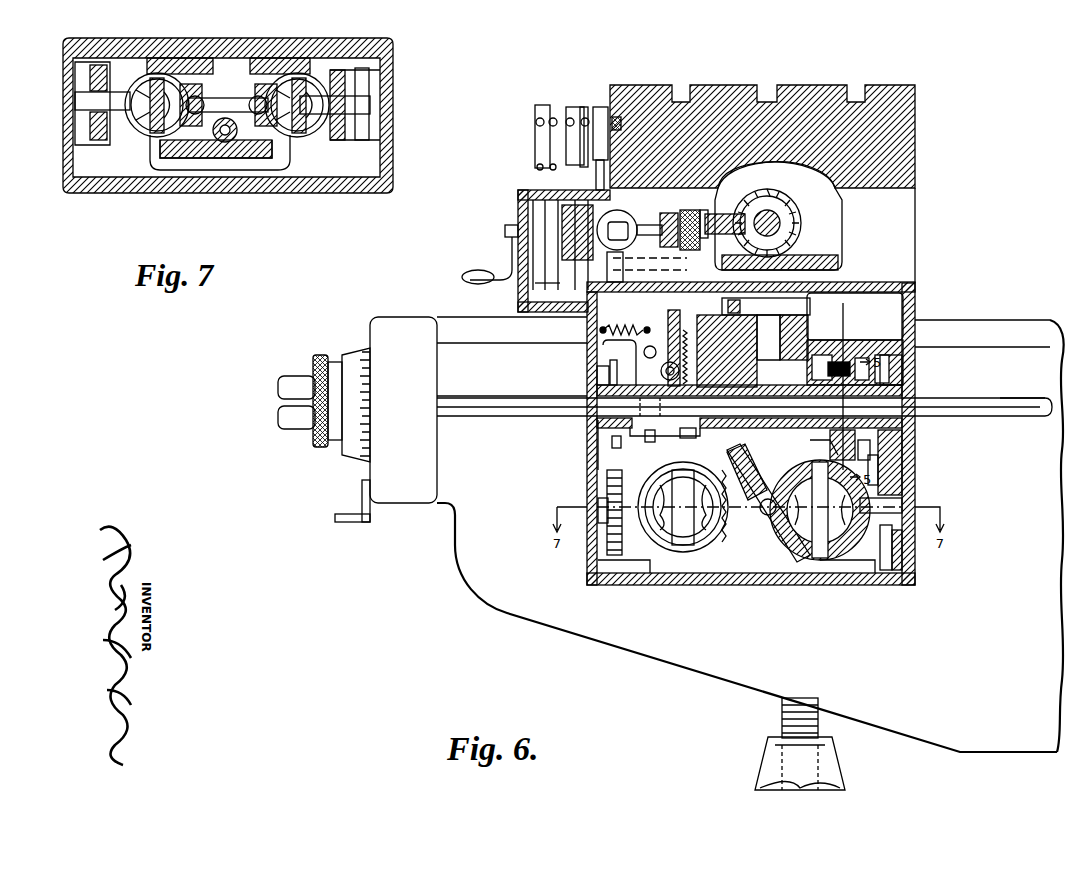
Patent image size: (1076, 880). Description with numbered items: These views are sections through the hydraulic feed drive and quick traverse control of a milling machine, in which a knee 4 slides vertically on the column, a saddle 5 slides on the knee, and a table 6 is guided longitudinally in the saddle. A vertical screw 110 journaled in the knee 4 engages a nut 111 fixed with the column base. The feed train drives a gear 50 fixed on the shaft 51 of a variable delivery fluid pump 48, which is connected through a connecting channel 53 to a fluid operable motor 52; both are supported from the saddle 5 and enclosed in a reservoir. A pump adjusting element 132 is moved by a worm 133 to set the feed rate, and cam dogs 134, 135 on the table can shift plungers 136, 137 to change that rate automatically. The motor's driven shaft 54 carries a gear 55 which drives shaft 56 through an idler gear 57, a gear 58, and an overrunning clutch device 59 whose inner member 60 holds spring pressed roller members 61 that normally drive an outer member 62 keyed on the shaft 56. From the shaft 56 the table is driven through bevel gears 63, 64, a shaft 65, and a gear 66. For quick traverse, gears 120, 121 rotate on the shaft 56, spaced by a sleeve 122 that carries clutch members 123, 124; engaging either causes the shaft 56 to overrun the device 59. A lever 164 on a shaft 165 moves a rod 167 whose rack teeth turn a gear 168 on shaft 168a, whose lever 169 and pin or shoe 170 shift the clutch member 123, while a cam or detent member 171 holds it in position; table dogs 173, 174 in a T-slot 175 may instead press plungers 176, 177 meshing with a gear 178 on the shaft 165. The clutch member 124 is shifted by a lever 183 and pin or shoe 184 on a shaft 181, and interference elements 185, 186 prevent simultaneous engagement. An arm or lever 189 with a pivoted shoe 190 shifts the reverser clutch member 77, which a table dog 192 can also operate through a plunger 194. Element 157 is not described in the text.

In FIG. 6, the knee 4 is at (532, 611).
In FIG. 6, the saddle 5 is at (917, 218).
In FIG. 6, the table 6 is at (917, 138).
In FIG. 7, the fluid pump 48 is at (165, 65).
In FIG. 6, the fluid pump 48 is at (708, 560).
In FIG. 7, the gear 50 is at (65, 140).
In FIG. 6, the gear 50 is at (605, 474).
In FIG. 7, the shaft 51 is at (82, 101).
In FIG. 6, the shaft 51 is at (605, 530).
In FIG. 7, the fluid operable motor 52 is at (295, 65).
In FIG. 6, the fluid operable motor 52 is at (800, 565).
In FIG. 7, the connecting channel 53 is at (210, 172).
In FIG. 6, the driven shaft 54 is at (895, 505).
In FIG. 7, the gear 55 is at (355, 136).
In FIG. 6, the gear 55 is at (898, 540).
In FIG. 6, the shaft 56 is at (1003, 418).
In FIG. 6, the idler gear 57 is at (905, 457).
In FIG. 6, the gear 58 is at (900, 372).
In FIG. 6, the overrunning clutch device 59 is at (856, 360).
In FIG. 6, the inner member 60 is at (840, 358).
In FIG. 6, the roller members 61 is at (878, 360).
In FIG. 6, the outer member 62 is at (832, 458).
In FIG. 6, the bevel gear 63 is at (820, 450).
In FIG. 6, the bevel gear 64 is at (822, 360).
In FIG. 6, the shaft 65 is at (752, 351).
In FIG. 6, the gear 66 is at (810, 305).
In FIG. 6, the clutch member 77 is at (778, 216).
In FIG. 6, the vertical screw 110 is at (782, 706).
In FIG. 6, the nut 111 is at (775, 742).
In FIG. 6, the gear 120 is at (692, 439).
In FIG. 6, the gear 121 is at (600, 370).
In FIG. 6, the sleeve 122 is at (612, 446).
In FIG. 6, the clutch member 123 is at (660, 428).
In FIG. 6, the clutch member 124 is at (645, 440).
In FIG. 7, the pump adjusting element 132 is at (230, 142).
In FIG. 6, the pump adjusting element 132 is at (745, 555).
In FIG. 7, the worm 133 is at (262, 150).
In FIG. 6, the worm 133 is at (752, 555).
In FIG. 6, the cam dog 134 is at (540, 140).
In FIG. 6, the cam dog 135 is at (535, 108).
In FIG. 6, the plunger 136 is at (553, 168).
In FIG. 6, the plunger 137 is at (538, 165).
In FIG. 6, the handle 157 is at (345, 505).
In FIG. 6, the lever 164 is at (508, 250).
In FIG. 6, the shaft 165 is at (518, 208).
In FIG. 6, the rod 167 is at (690, 302).
In FIG. 6, the gear 168 is at (686, 340).
In FIG. 6, the shaft 168a is at (678, 371).
In FIG. 6, the lever 169 is at (700, 409).
In FIG. 6, the pin or shoe 170 is at (674, 408).
In FIG. 6, the cam or detent member 171 is at (632, 220).
In FIG. 6, the table dog 173 is at (585, 108).
In FIG. 6, the table dog 174 is at (570, 108).
In FIG. 6, the T-slot 175 is at (619, 115).
In FIG. 6, the plunger 176 is at (580, 190).
In FIG. 6, the plunger 177 is at (560, 178).
In FIG. 6, the gear 178 is at (535, 283).
In FIG. 6, the shaft 181 is at (645, 354).
In FIG. 6, the lever 183 is at (592, 385).
In FIG. 6, the pin or shoe 184 is at (600, 412).
In FIG. 6, the interference element 185 is at (728, 302).
In FIG. 6, the interference element 186 is at (645, 318).
In FIG. 6, the arm or lever 189 is at (724, 234).
In FIG. 6, the pivoted shoe 190 is at (762, 205).
In FIG. 6, the table dog 192 is at (598, 107).
In FIG. 6, the plunger 194 is at (608, 170).